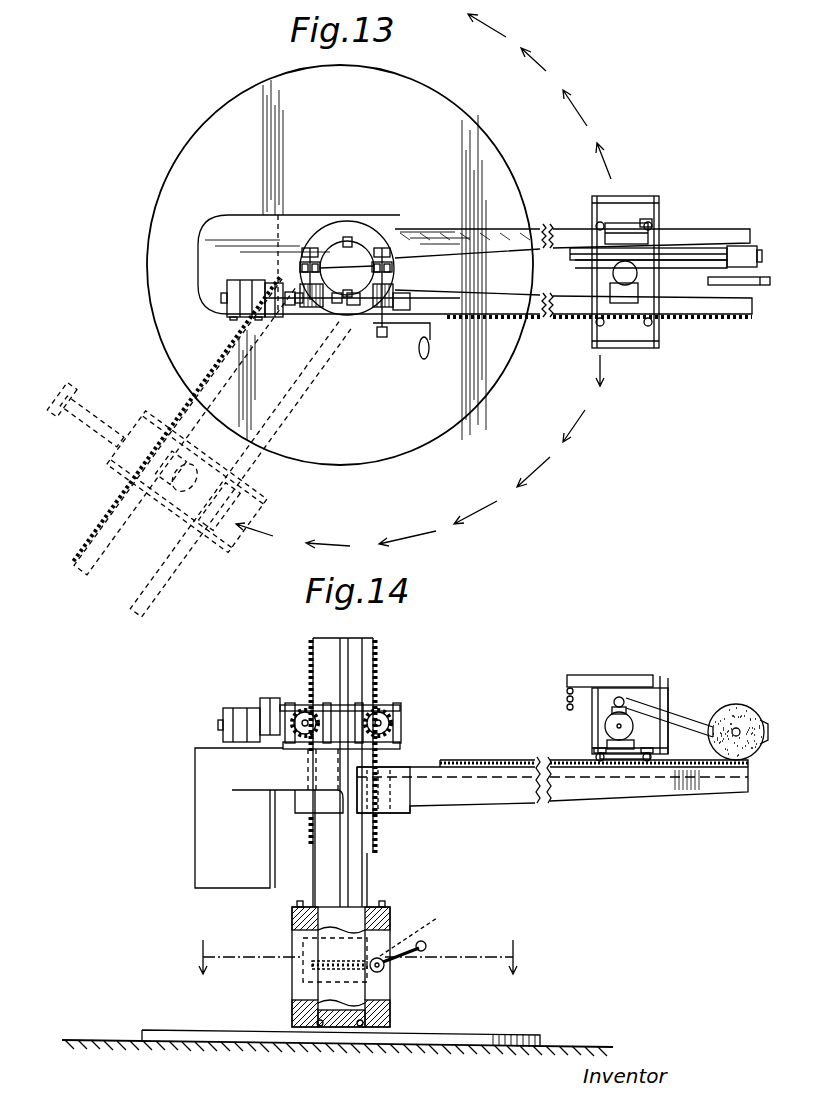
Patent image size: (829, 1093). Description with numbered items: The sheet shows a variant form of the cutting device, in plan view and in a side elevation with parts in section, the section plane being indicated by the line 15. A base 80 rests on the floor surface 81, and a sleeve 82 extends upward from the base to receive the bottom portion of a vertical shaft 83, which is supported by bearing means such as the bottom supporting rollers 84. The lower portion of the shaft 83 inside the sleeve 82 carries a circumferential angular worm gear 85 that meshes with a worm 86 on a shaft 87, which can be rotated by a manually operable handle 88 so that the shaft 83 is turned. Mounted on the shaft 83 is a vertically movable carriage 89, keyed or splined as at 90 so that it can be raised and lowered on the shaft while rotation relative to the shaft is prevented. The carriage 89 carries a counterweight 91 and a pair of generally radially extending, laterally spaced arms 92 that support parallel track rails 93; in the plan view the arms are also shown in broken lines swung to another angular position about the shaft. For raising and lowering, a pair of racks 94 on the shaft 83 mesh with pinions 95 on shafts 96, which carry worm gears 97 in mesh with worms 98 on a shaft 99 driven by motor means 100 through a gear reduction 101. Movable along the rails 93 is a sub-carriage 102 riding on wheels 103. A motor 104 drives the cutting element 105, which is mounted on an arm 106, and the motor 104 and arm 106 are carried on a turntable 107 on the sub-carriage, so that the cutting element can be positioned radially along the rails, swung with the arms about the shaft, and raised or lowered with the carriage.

In FIG. 14, the section line 15- 15 is at (360, 957).
In FIG. 13, the base 80 is at (428, 442).
In FIG. 14, the base 80 is at (510, 1035).
In FIG. 14, the floor surface 81 is at (583, 1047).
In FIG. 14, the sleeve 82 is at (392, 1003).
In FIG. 13, the vertical shaft 83 is at (333, 252).
In FIG. 14, the vertical shaft 83 is at (370, 878).
In FIG. 14, the bottom supporting rollers 84 is at (322, 1026).
In FIG. 14, the circumferential angular worm gear 85 is at (303, 965).
In FIG. 14, the worm 86 is at (414, 926).
In FIG. 13, the shaft 87 is at (382, 338).
In FIG. 14, the shaft 87 is at (388, 970).
In FIG. 13, the manually operable handle 88 is at (424, 360).
In FIG. 14, the manually operable handle 88 is at (428, 946).
In FIG. 13, the carriage 89 is at (370, 232).
In FIG. 14, the carriage 89 is at (385, 810).
In FIG. 13, the key or spline 90 is at (349, 240).
In FIG. 14, the key or spline 90 is at (335, 800).
In FIG. 13, the counterweight 91 is at (205, 268).
In FIG. 14, the counterweight 91 is at (195, 828).
In FIG. 13, the arms 92 is at (528, 238).
In FIG. 14, the arms 92 is at (557, 790).
In FIG. 13, the track rails 93 is at (547, 232).
In FIG. 14, the track rails 93 is at (539, 758).
In FIG. 13, the racks 94 is at (347, 273).
In FIG. 14, the racks 94 is at (310, 645).
In FIG. 13, the pinions 95 is at (300, 264).
In FIG. 14, the pinions 95 is at (395, 712).
In FIG. 13, the shafts 96 is at (300, 272).
In FIG. 14, the shafts 96 is at (300, 712).
In FIG. 14, the worm gears 97 is at (402, 726).
In FIG. 13, the worms 98 is at (306, 308).
In FIG. 14, the worms 98 is at (306, 710).
In FIG. 13, the shaft 99 is at (337, 305).
In FIG. 14, the shaft 99 is at (335, 685).
In FIG. 13, the motor means 100 is at (232, 318).
In FIG. 14, the motor means 100 is at (222, 712).
In FIG. 13, the gear reduction 101 is at (275, 318).
In FIG. 14, the gear reduction 101 is at (262, 700).
In FIG. 13, the sub-carriage 102 is at (622, 240).
In FIG. 14, the sub-carriage 102 is at (603, 762).
In FIG. 13, the wheels 103 is at (597, 205).
In FIG. 14, the wheels 103 is at (597, 755).
In FIG. 13, the motor 104 is at (640, 283).
In FIG. 14, the motor 104 is at (612, 728).
In FIG. 14, the cutting element 105 is at (735, 718).
In FIG. 13, the arm 106 is at (700, 250).
In FIG. 14, the arm 106 is at (690, 720).
In FIG. 13, the turntable 107 is at (670, 341).
In FIG. 14, the turntable 107 is at (582, 721).